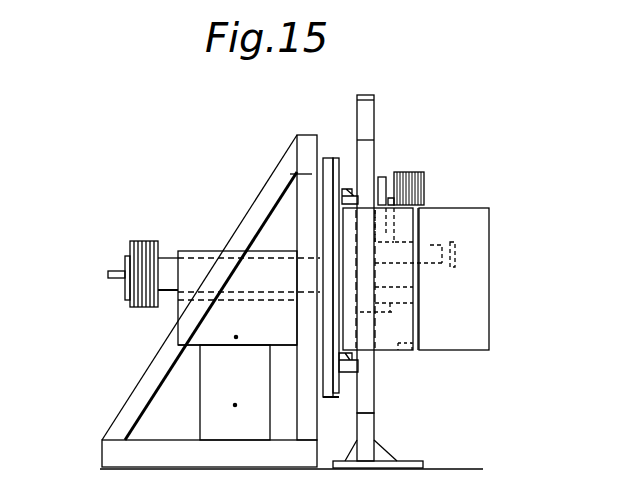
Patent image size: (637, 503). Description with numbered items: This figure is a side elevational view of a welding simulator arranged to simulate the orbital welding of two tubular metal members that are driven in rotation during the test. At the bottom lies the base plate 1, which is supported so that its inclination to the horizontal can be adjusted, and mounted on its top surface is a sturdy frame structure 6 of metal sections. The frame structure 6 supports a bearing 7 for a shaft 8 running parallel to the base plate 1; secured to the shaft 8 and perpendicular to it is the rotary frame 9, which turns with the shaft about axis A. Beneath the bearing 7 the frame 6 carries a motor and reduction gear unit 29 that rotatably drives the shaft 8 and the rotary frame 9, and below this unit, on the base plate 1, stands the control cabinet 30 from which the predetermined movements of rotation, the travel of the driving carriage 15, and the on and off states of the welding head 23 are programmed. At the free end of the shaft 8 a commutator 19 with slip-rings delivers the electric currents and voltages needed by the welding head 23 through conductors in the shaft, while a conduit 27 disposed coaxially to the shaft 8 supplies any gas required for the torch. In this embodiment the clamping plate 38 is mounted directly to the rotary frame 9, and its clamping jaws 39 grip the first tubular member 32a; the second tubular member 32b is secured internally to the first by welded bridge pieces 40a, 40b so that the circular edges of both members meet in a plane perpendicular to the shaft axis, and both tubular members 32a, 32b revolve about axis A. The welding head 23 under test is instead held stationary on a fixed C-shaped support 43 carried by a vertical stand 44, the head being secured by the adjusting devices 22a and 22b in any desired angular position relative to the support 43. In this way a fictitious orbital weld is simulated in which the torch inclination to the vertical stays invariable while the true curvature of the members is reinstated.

The base plate 1 is at (192, 447).
The frame structure 6 is at (275, 167).
The bearing 7 is at (200, 263).
The shaft 8 is at (168, 261).
The rotary frame 9 is at (333, 158).
The driving carriage 15 is at (415, 172).
The commutator 19 is at (141, 243).
The adjusting device 22a is at (428, 238).
The adjusting device 22b is at (424, 306).
The welding head 23 is at (432, 276).
The conduit 27 is at (112, 279).
The motor and reduction gear unit 29 is at (237, 326).
The control cabinet 30 is at (235, 392).
The first tubular member 32a is at (385, 333).
The second tubular member 32b is at (470, 338).
The clamping plate 38 is at (335, 398).
The clamping jaw 39 is at (350, 373).
The welded bridge piece 40a is at (438, 215).
The welded bridge piece 40b is at (414, 348).
The C-shaped support 43 is at (370, 123).
The vertical stand 44 is at (365, 402).